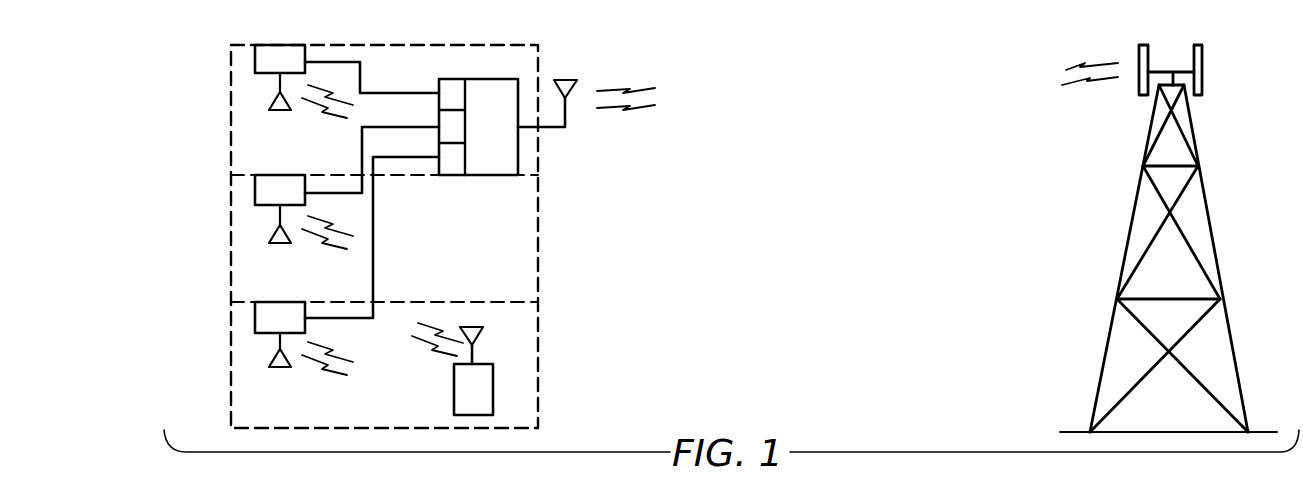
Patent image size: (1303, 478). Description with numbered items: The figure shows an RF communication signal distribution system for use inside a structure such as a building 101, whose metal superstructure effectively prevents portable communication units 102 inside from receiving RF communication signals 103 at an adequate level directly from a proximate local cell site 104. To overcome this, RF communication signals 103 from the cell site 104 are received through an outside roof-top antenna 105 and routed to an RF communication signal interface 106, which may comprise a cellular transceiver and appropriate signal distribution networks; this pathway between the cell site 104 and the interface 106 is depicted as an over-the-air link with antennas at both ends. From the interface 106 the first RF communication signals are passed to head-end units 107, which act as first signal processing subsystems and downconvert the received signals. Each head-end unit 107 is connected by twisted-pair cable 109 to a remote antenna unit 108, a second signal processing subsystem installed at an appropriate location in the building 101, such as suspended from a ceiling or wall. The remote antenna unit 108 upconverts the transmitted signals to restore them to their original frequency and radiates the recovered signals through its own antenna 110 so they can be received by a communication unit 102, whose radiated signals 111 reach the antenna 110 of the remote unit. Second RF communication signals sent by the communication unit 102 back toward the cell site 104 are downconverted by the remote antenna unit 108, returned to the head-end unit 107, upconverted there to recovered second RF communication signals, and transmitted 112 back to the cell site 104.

The building 101 is at (210, 143).
The portable communication units 102 is at (493, 392).
The RF communication signals 103 is at (1081, 88).
The local cell site 104 is at (1236, 168).
The roof-top antenna 105 is at (560, 80).
The RF communication signal interface 106 is at (498, 145).
The head-end units 107 is at (452, 90).
The remote antenna units 108 is at (265, 66).
The twisted-pair cable 109 is at (361, 80).
The antenna 110 is at (277, 110).
The radio signals 111 is at (423, 348).
The transmitted recovered second RF communication signals 112 is at (627, 118).